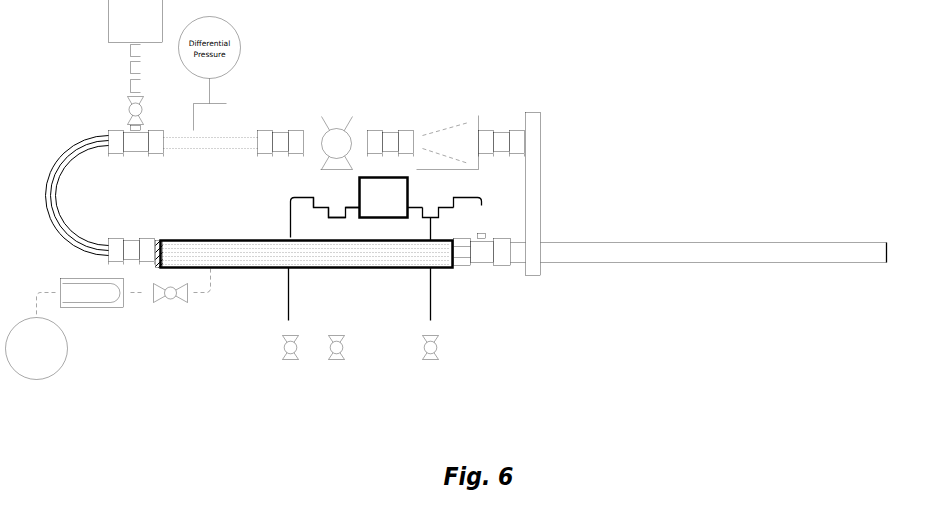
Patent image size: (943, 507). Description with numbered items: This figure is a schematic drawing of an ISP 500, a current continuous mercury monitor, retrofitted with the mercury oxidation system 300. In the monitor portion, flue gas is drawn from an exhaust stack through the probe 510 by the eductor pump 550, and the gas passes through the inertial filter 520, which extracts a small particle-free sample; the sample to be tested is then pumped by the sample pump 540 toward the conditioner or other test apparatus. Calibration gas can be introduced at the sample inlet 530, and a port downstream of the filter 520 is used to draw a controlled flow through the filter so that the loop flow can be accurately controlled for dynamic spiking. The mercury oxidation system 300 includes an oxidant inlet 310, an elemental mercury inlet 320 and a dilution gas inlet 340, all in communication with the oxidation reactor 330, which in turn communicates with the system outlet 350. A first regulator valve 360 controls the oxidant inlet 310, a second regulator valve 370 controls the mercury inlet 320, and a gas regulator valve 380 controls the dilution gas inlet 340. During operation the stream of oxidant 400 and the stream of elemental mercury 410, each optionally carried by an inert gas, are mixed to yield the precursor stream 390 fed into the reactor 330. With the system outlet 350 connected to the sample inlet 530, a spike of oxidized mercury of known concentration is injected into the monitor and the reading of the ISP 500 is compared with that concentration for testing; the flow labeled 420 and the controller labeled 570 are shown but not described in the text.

The mercury oxidation system 300 is at (291, 189).
The oxidant inlet 310 is at (312, 190).
The elemental mercury inlet 320 is at (327, 218).
The oxidation reactor 330 is at (384, 198).
The dilution gas inlet 340 is at (421, 218).
The system outlet 350 is at (353, 196).
The first regulator valve 360 is at (292, 360).
The second regulator valve 370 is at (339, 359).
The gas regulator valve 380 is at (431, 359).
The precursor stream 390 is at (514, 194).
The stream of oxidant 400 is at (409, 190).
The stream of elemental mercury 410 is at (359, 294).
The dilution or zero air source 420 is at (457, 303).
The ISP 500 is at (415, 72).
The probe 510 is at (714, 254).
The inertial filter 520 is at (281, 244).
The sample inlet 530 is at (490, 261).
The sample pump 540 is at (108, 324).
The eductor pump 550 is at (448, 135).
The mass flow controller 570 is at (116, 65).